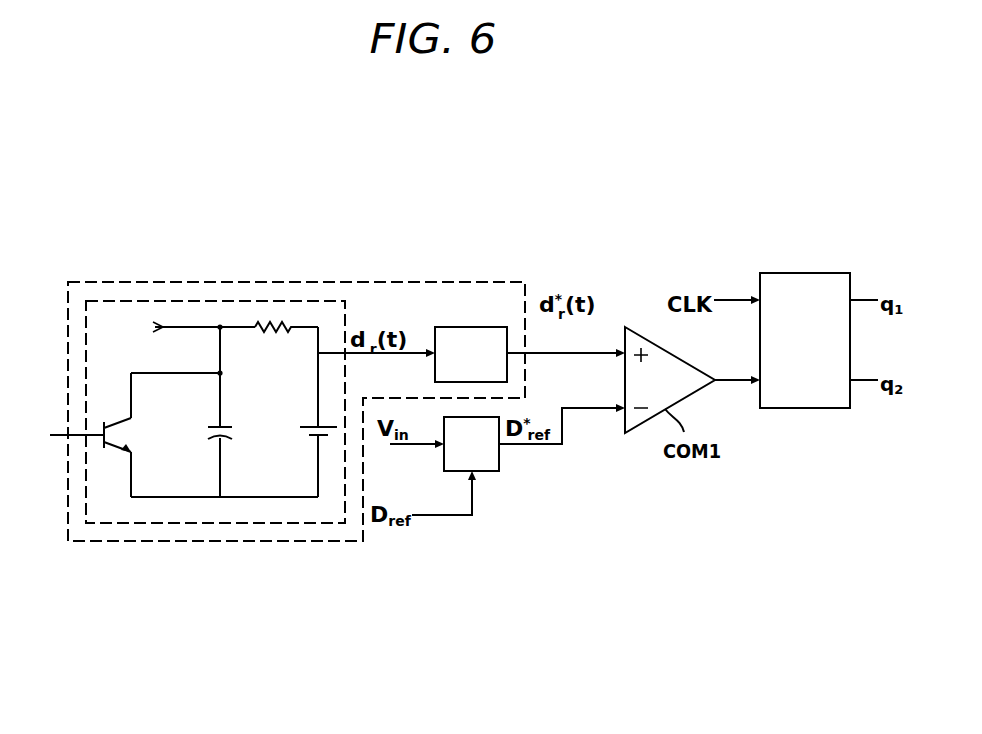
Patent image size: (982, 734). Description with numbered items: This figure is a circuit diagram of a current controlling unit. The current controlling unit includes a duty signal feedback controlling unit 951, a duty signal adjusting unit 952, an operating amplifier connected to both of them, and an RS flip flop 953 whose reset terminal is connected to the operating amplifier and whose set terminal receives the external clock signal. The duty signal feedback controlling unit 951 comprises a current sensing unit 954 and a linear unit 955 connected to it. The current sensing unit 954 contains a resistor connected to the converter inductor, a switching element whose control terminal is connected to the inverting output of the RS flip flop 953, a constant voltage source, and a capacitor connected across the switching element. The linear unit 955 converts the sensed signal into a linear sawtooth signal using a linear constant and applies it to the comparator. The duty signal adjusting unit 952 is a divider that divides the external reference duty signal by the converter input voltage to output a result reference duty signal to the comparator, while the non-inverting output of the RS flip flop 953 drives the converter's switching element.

The duty signal feedback controlling unit 951 is at (118, 282).
The current sensing unit 954 is at (253, 301).
The linear unit 955 is at (468, 327).
The duty signal adjusting unit 952 is at (499, 460).
The RS flip flop 953 is at (797, 273).